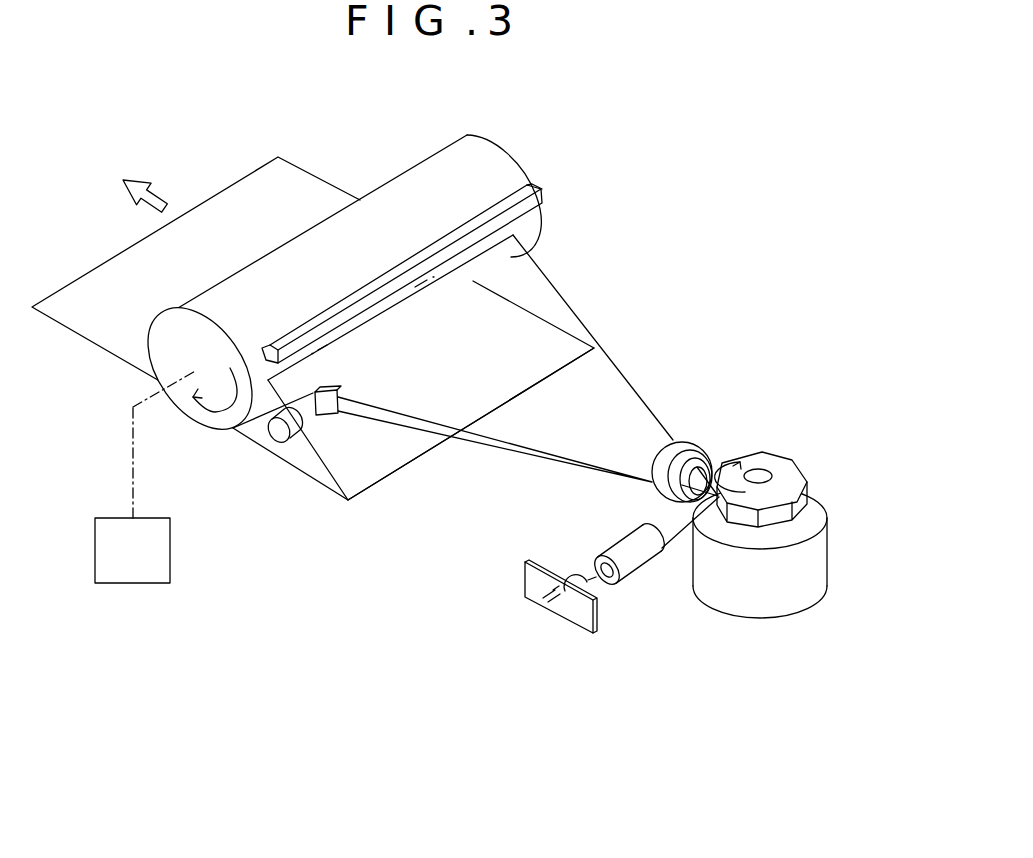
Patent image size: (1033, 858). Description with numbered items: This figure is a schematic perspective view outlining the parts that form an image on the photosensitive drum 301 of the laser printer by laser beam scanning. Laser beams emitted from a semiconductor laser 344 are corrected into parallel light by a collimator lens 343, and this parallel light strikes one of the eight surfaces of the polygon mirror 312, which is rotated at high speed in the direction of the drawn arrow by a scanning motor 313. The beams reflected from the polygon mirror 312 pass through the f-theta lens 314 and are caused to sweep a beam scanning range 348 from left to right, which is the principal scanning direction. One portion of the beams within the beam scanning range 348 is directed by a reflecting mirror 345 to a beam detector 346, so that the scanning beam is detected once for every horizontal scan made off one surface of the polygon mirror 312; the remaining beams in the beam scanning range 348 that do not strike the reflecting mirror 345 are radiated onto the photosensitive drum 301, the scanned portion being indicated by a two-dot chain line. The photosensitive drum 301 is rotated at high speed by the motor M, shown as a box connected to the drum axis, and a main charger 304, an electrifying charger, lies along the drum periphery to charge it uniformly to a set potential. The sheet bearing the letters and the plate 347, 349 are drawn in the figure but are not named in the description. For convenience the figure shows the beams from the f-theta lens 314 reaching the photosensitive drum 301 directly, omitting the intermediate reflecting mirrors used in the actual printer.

The photosensitive drum 301 is at (497, 145).
The main charger 304 is at (541, 190).
The polygon mirror 312 is at (803, 475).
The scanning motor 313 is at (827, 552).
The f-theta lens 314 is at (695, 437).
The collimator lens 343 is at (655, 567).
The semiconductor laser 344 is at (583, 633).
The reflecting mirror 345 is at (333, 415).
The beam detector 346 is at (283, 443).
The document sheet 347 is at (105, 352).
The beam scanning range 348 is at (590, 463).
The plate 349 is at (497, 245).
The motor M is at (158, 583).